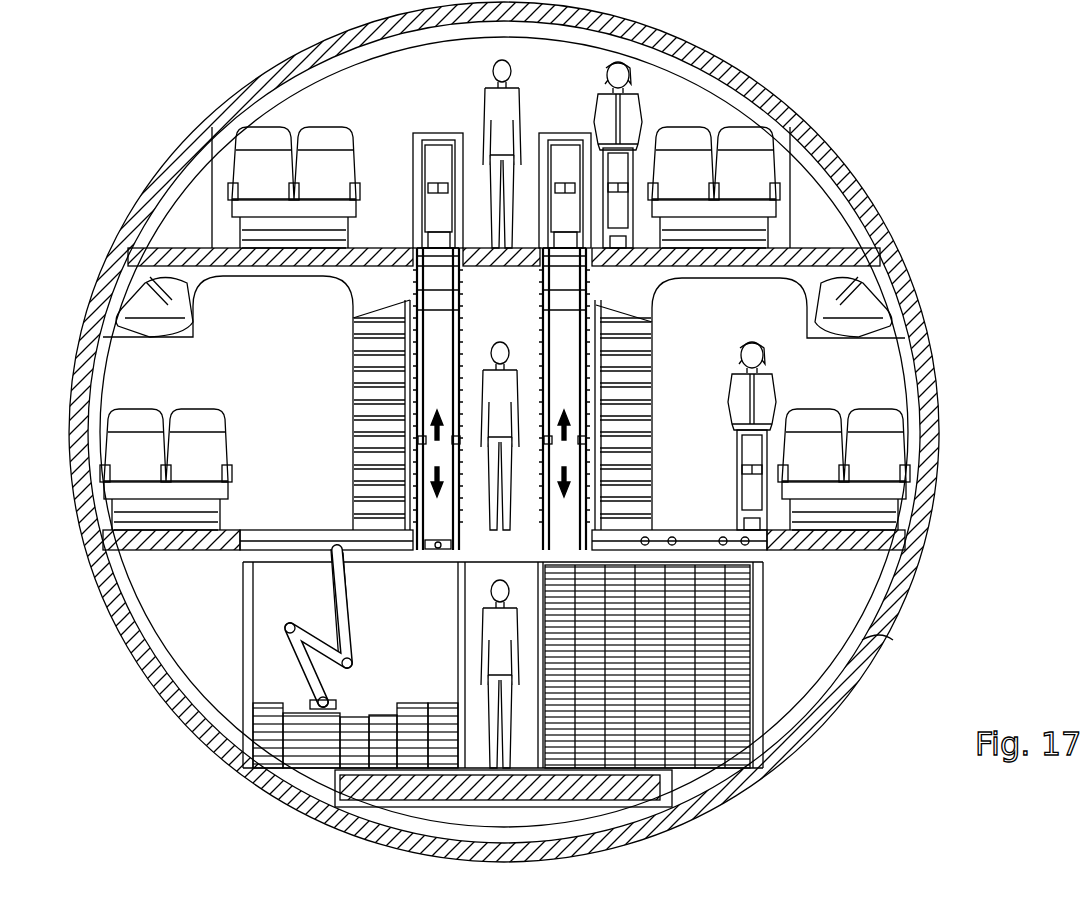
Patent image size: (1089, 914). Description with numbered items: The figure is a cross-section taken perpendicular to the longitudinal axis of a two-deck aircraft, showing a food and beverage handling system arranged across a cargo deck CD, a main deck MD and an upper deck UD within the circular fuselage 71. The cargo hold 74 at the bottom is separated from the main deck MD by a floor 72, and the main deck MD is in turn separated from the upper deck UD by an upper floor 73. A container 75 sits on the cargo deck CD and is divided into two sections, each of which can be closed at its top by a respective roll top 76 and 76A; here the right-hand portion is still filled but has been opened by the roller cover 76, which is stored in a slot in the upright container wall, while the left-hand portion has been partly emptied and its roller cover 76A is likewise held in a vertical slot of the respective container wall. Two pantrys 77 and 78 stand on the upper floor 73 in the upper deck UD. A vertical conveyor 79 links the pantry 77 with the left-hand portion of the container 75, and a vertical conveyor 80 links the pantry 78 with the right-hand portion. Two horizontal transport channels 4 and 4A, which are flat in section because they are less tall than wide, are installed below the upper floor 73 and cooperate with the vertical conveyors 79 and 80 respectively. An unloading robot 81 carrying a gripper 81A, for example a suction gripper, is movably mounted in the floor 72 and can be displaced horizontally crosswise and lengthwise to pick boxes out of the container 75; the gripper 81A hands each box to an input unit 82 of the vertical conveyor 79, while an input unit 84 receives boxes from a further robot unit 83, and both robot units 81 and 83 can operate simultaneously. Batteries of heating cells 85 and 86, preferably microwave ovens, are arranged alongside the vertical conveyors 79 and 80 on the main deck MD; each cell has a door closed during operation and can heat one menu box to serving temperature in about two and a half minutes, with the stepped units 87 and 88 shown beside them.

The fuselage shell 71 is at (748, 74).
The floor 72 is at (236, 532).
The upper floor 73 is at (852, 246).
The cargo hold 74 is at (866, 600).
The container 75 is at (243, 594).
The roll top 76A is at (250, 648).
The roll top 76 is at (762, 597).
The robot unit 83 is at (766, 572).
The pantry 77 is at (440, 133).
The pantry 78 is at (560, 133).
The horizontal transport channel 4 is at (415, 286).
The horizontal transport channel 4A is at (590, 283).
The vertical conveyor 79 is at (353, 320).
The vertical conveyor 80 is at (652, 320).
The battery of heating cells 85 is at (354, 385).
The battery of heating cells 86 is at (651, 385).
The left staircase lower flight 87 is at (354, 468).
The right staircase lower flight 88 is at (651, 468).
The input unit 84 is at (651, 512).
The unloading robot 81 is at (328, 648).
The gripper 81A is at (340, 704).
The input unit 82 is at (440, 548).
The upper deck UD is at (823, 213).
The main deck MD is at (878, 388).
The cargo deck CD is at (655, 790).